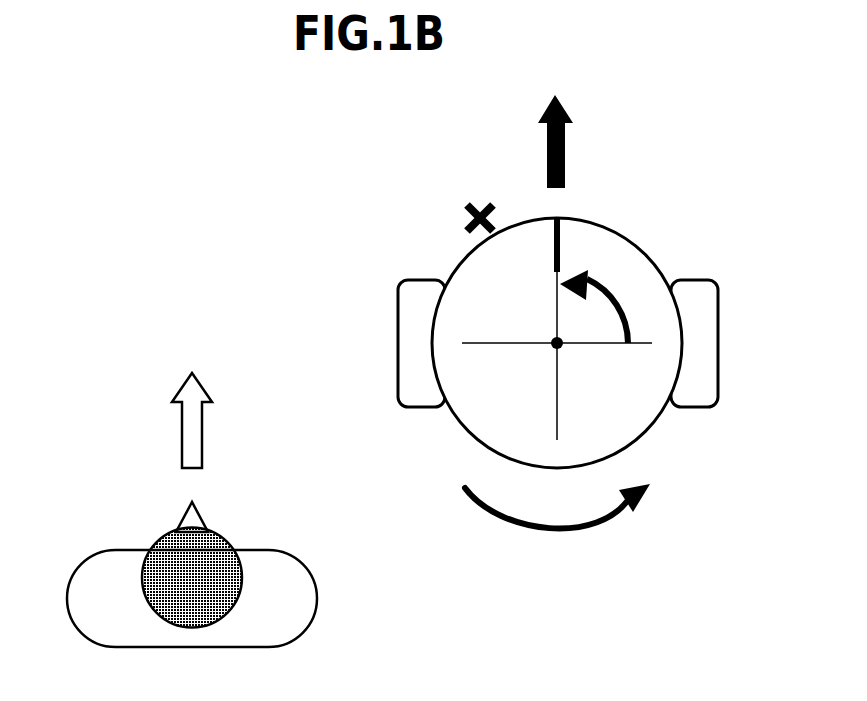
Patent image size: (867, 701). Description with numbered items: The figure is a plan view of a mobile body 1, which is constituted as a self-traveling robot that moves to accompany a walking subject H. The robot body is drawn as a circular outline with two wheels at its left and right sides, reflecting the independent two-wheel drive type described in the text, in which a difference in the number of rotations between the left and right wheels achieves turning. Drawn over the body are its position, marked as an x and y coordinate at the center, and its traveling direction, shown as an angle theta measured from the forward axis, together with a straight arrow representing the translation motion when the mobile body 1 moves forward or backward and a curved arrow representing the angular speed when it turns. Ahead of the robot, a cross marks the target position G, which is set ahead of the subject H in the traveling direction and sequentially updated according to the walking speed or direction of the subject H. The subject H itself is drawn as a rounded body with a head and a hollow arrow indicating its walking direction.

The mobile body 1 is at (641, 172).
The target position G is at (480, 204).
The subject H is at (94, 532).